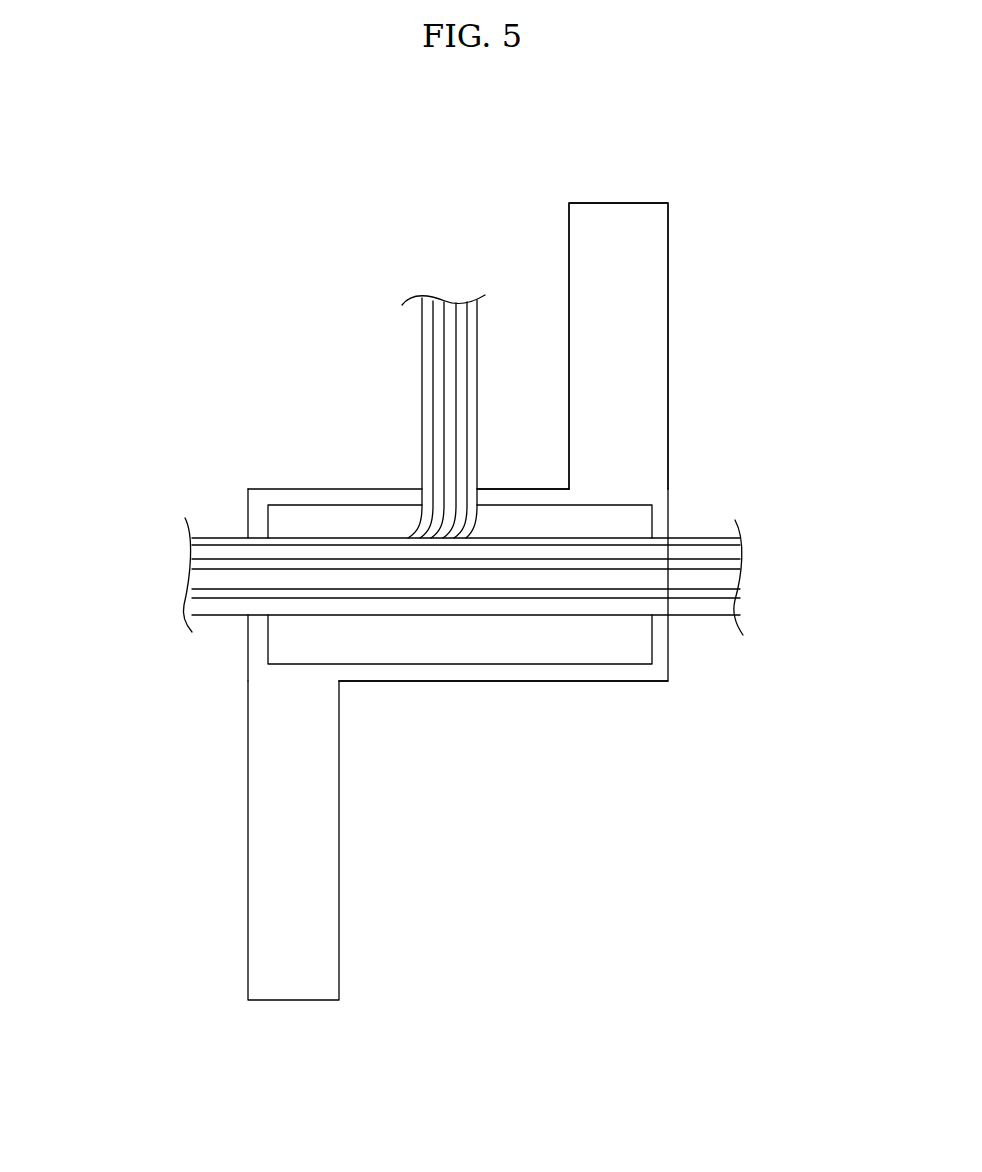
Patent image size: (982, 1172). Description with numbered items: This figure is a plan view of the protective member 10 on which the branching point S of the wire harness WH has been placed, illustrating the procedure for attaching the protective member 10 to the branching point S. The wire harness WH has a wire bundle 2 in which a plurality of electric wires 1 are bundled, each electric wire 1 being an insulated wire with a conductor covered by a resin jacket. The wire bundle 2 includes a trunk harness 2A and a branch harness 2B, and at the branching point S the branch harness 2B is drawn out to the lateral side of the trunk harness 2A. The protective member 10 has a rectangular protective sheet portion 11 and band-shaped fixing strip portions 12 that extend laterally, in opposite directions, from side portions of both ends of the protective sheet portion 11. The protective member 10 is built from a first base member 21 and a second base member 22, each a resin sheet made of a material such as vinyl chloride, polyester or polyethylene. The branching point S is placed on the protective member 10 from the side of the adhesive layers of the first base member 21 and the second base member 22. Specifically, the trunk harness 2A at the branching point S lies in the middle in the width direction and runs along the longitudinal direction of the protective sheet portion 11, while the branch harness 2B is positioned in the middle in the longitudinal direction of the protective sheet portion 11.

The electric wire 1 is at (203, 608).
The wire bundle 2 is at (218, 535).
The trunk harness 2A is at (400, 617).
The branch harness 2B is at (421, 388).
The protective member 10 is at (292, 466).
The protective sheet portion 11 is at (507, 683).
The fixing strip portion 12 is at (669, 325).
The first base member 21 is at (648, 462).
The second base member 22 is at (628, 523).
The branching point S is at (489, 467).
The wire harness WH is at (223, 623).